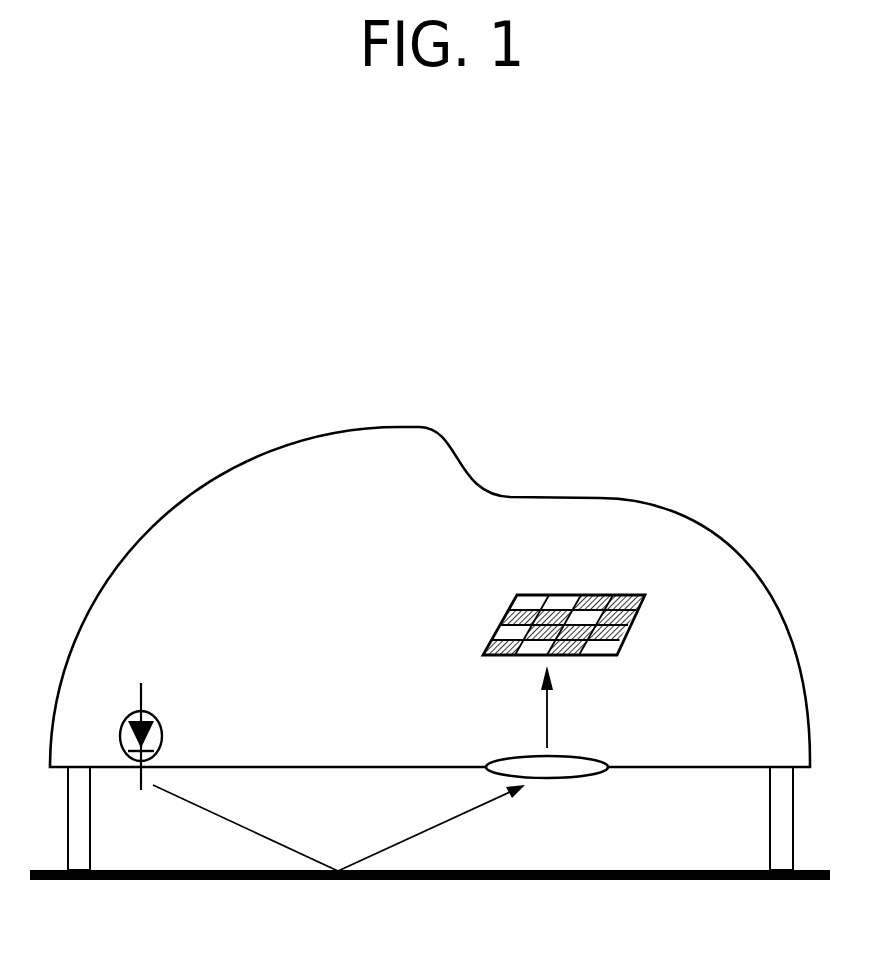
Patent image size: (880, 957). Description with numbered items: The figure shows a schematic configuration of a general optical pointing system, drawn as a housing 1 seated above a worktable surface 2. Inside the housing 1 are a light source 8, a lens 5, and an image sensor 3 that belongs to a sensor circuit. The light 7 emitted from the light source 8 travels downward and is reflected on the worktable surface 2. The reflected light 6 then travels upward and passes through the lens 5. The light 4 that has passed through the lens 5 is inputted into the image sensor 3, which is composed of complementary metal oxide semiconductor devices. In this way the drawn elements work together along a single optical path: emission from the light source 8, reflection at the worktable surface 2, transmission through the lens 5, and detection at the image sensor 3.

The housing 1 is at (733, 557).
The worktable surface 2 is at (560, 880).
The image sensor 3 is at (590, 595).
The light 4 is at (547, 697).
The lens 5 is at (598, 758).
The reflected light 6 is at (408, 835).
The light 7 is at (248, 826).
The light source 8 is at (162, 736).